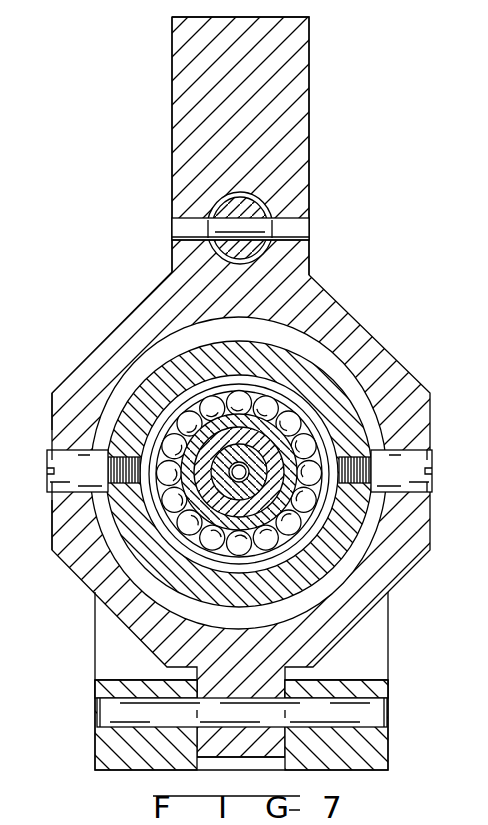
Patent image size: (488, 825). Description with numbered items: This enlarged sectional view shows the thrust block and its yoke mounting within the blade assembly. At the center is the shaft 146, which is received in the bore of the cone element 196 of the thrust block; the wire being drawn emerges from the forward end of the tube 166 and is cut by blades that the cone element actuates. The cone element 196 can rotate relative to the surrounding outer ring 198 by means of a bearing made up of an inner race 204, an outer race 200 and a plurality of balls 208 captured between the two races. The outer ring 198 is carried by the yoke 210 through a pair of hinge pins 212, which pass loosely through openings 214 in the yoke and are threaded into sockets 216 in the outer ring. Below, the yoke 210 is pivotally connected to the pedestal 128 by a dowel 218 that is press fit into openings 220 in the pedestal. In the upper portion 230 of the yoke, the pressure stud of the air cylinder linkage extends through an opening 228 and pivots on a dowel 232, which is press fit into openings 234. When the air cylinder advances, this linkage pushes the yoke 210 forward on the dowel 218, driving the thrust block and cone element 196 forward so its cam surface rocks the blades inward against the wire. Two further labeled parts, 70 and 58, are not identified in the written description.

The yoke 210 is at (374, 343).
The upper portion of yoke 230 is at (311, 80).
The opening 228 is at (236, 194).
The openings 234 is at (193, 222).
The dowel 232 is at (309, 202).
The outer race 200 is at (196, 342).
The outer ring 198 is at (284, 352).
The balls 208 is at (163, 518).
The inner race 204 is at (217, 532).
The shaft 146 is at (275, 520).
The tube 166 is at (271, 428).
The cone element 196 is at (236, 512).
The sockets 216 is at (127, 460).
The hinge pins 212 is at (48, 488).
The openings 214 is at (44, 452).
The pedestal 128 is at (142, 771).
The dowel 218 is at (389, 711).
The openings 220 is at (120, 701).
The arm 70 is at (26, 394).
The support 58 is at (26, 504).